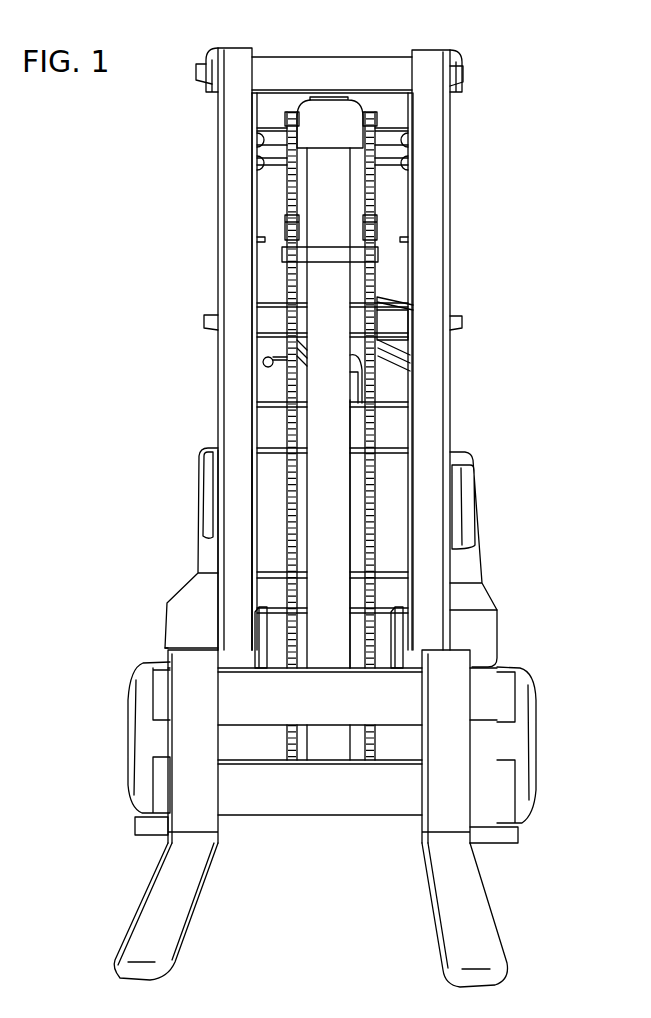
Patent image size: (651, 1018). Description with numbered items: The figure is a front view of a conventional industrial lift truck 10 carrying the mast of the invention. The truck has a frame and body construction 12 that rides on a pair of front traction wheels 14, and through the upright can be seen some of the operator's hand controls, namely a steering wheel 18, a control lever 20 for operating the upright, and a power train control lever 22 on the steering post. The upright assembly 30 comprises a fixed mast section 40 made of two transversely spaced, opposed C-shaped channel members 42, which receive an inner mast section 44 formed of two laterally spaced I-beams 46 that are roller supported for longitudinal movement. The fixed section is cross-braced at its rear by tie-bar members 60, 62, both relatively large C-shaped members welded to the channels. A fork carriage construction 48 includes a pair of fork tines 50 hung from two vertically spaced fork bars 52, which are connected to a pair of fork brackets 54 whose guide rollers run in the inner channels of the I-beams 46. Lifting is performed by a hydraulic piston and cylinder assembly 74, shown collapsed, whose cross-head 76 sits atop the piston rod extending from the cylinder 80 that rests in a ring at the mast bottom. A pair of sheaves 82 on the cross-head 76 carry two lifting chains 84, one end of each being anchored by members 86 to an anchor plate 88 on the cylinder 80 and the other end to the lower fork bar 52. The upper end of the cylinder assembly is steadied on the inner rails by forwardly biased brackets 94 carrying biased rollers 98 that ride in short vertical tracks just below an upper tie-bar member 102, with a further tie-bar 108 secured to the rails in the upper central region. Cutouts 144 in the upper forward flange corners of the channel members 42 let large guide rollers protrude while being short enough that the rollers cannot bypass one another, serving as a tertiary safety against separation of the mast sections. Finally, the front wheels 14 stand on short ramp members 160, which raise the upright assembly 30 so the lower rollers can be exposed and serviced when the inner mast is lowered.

The industrial lift truck 10 is at (500, 541).
The frame and body construction 12 is at (490, 600).
The traction wheels 14 is at (145, 736).
The steering wheel 18 is at (382, 300).
The control lever 20 is at (263, 357).
The power train control lever 22 is at (410, 365).
The upright assembly 30 is at (459, 252).
The fixed mast section 40 is at (208, 494).
The channel members 42 is at (217, 176).
The inner mast section 44 is at (229, 545).
The I-beams 46 is at (228, 292).
The fork carriage construction 48 is at (287, 829).
The fork tines 50 is at (187, 895).
The fork bars 52 is at (336, 711).
The fork brackets 54 is at (278, 660).
The tie-bar member 60 is at (464, 72).
The tie-bar member 62 is at (462, 320).
The hydraulic piston and cylinder assembly 74 is at (358, 513).
The cross-head 76 is at (326, 110).
The cylinder 80 is at (336, 400).
The sheaves or sprockets 82 is at (285, 118).
The lifting chains 84 is at (288, 418).
The anchor members 86 is at (288, 233).
The anchor plate 88 is at (285, 255).
The brackets 94 is at (395, 150).
The biased rollers 98 is at (418, 172).
The upper tie-bar member 102 is at (378, 60).
The tie-bar 108 is at (398, 318).
The cutouts 144 is at (233, 48).
The ramp members 160 is at (500, 832).